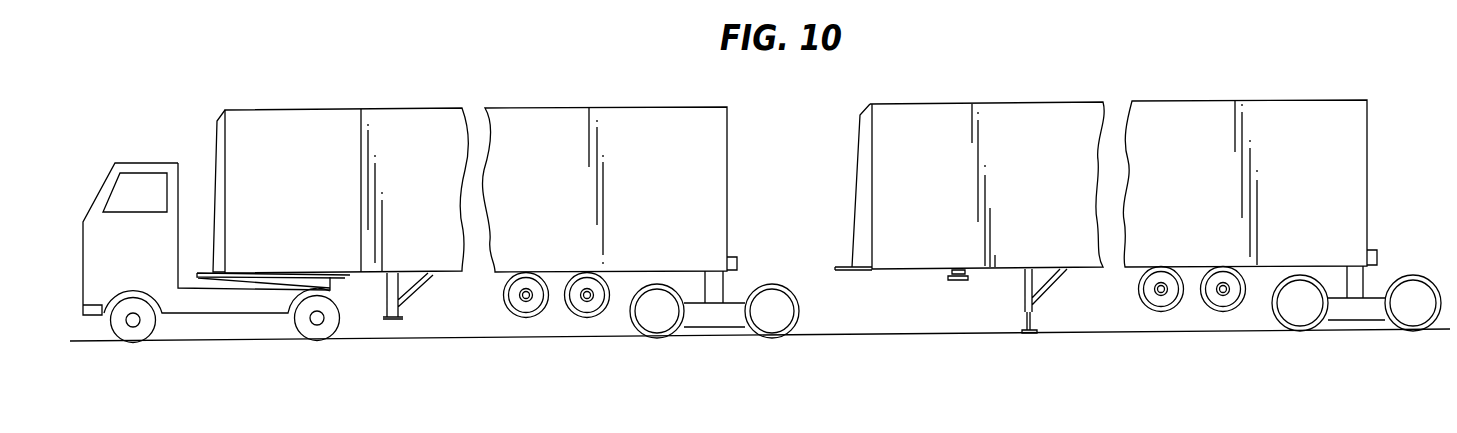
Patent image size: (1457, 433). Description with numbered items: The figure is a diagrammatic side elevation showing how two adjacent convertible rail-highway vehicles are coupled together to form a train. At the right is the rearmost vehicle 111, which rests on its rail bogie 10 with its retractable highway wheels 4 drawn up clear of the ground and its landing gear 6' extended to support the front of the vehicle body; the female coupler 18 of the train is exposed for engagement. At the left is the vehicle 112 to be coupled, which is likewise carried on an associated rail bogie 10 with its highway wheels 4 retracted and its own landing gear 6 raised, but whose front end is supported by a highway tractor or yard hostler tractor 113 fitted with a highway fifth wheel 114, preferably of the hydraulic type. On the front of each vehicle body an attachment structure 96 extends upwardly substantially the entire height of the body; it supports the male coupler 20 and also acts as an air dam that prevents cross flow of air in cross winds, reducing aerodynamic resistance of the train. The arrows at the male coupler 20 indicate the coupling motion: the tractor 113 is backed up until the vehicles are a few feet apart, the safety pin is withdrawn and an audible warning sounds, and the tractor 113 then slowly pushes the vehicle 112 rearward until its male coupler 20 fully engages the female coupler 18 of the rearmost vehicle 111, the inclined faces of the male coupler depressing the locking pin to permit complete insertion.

The retractable highway wheels 4 is at (528, 302).
The trailer type landing gear 6 is at (408, 323).
The landing gear 6' is at (1046, 318).
The dual axle bogie 10 is at (718, 322).
The female coupler 18 is at (740, 258).
The male coupler 20 is at (203, 262).
The attachment structure 96 is at (222, 185).
The rearmost vehicle 111 is at (1077, 108).
The vehicle to be coupled 112 is at (438, 114).
The highway tractor or yard hostler tractor 113 is at (213, 308).
The fifth wheel 114 is at (307, 273).